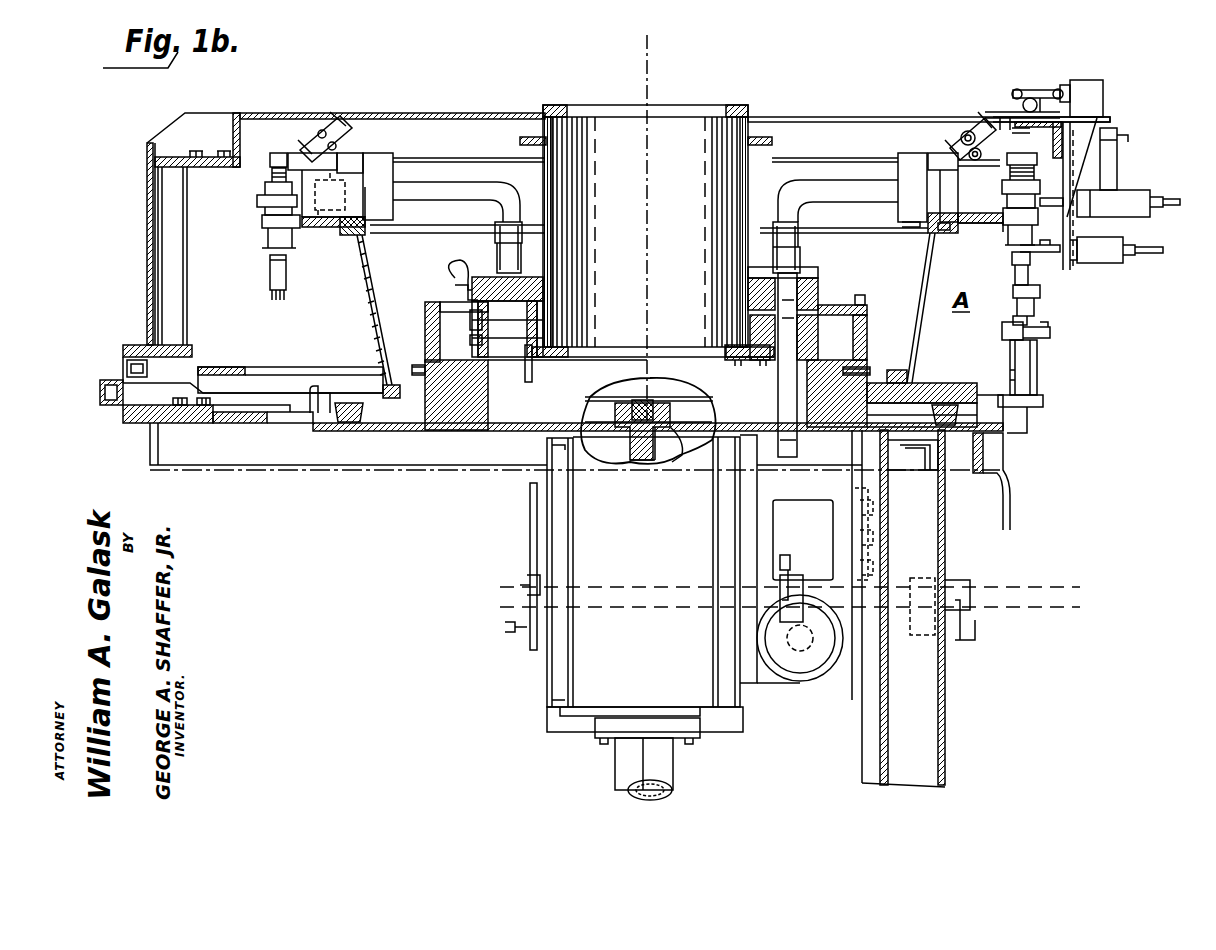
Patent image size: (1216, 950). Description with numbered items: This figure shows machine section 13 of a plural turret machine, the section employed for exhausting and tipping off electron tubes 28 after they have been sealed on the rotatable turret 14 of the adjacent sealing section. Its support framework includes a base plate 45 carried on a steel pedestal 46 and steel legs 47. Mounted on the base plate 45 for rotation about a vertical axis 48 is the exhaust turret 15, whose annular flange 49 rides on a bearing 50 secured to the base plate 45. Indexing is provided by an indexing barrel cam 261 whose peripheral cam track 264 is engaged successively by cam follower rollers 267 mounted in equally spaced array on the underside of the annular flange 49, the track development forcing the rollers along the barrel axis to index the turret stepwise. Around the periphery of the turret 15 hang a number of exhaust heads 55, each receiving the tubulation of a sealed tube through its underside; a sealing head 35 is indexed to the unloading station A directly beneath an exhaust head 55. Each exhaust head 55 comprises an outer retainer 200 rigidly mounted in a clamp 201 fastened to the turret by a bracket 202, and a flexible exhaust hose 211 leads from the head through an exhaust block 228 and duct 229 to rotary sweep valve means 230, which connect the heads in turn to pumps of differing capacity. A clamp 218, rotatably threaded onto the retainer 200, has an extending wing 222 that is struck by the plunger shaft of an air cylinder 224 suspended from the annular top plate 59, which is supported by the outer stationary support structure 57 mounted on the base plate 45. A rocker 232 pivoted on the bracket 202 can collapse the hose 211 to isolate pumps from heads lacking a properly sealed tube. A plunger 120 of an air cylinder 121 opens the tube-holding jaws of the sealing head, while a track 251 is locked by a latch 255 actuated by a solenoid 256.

The machine section 13 is at (547, 517).
The rotatable turret 14 is at (1010, 506).
The exhaust turret 15 is at (820, 285).
The electron tube 28 is at (262, 280).
The sealing head 35 is at (1038, 370).
The base plate 45 is at (378, 432).
The steel pedestal 46 is at (673, 770).
The steel legs 47 is at (945, 720).
The vertical axis 48 is at (651, 55).
The annular flange 49 is at (412, 382).
The bearing 50 is at (488, 397).
The exhaust head 55 is at (258, 220).
The outer stationary support structure 57 is at (190, 320).
The annular top plate 59 is at (275, 116).
The plunger 120 is at (1040, 243).
The air cylinder 121 is at (1115, 263).
The outer retainer 200 is at (287, 235).
The clamp 201 is at (256, 216).
The bracket 202 is at (330, 236).
The flexible exhaust hose 211 is at (940, 155).
The clamp 218 is at (1038, 188).
The extending wing 222 is at (1055, 210).
The air cylinder 224 is at (1140, 196).
The exhaust block 228 is at (913, 153).
The duct 229 is at (845, 178).
The rotary sweep valve means 230 is at (859, 263).
The rocker 232 is at (975, 128).
The track 251 is at (1010, 110).
The latch 255 is at (1012, 100).
The solenoid 256 is at (1098, 92).
The indexing barrel cam 261 is at (640, 440).
The cam track 264 is at (672, 455).
The cam follower rollers 267 is at (345, 424).